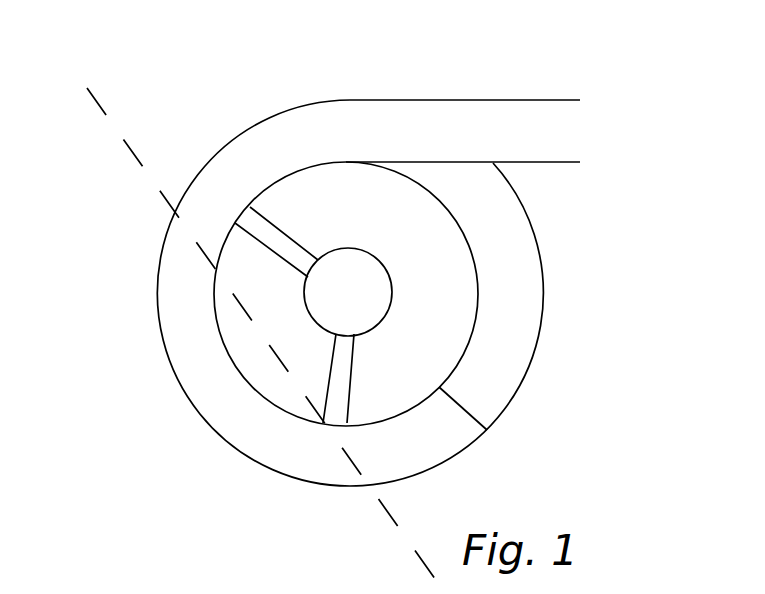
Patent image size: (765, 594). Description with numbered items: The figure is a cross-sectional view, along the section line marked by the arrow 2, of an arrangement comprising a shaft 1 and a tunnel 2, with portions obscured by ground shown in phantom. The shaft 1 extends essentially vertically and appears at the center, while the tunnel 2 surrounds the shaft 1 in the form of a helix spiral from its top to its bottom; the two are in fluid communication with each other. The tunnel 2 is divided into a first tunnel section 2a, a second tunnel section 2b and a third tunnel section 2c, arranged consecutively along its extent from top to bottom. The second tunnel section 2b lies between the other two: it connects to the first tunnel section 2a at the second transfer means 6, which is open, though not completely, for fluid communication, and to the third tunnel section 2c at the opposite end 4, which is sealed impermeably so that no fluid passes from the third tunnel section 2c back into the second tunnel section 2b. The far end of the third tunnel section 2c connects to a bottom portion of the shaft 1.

The shaft 1 is at (342, 277).
The tunnel 2 is at (87, 88).
The first tunnel section 2a is at (197, 192).
The second tunnel section 2b is at (236, 427).
The third tunnel section 2c is at (517, 317).
The end 4 is at (463, 412).
The second transfer means 6 is at (215, 295).